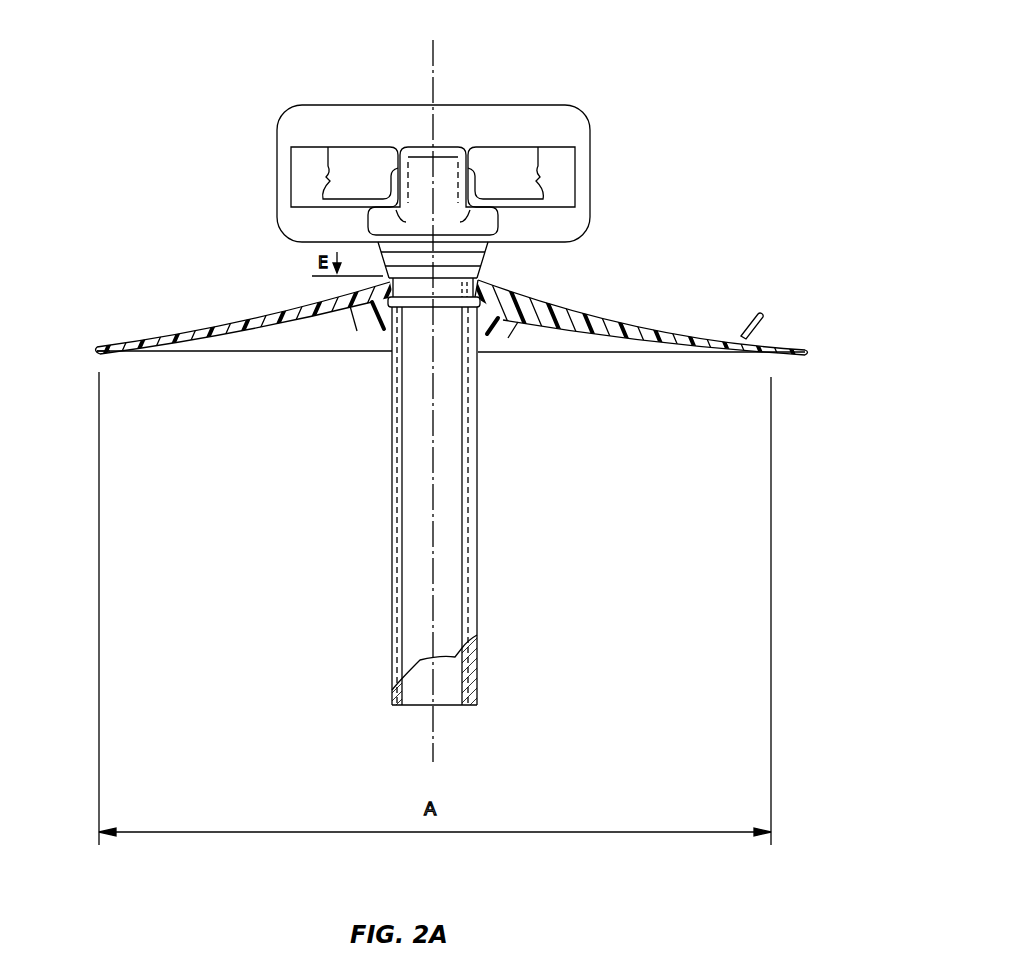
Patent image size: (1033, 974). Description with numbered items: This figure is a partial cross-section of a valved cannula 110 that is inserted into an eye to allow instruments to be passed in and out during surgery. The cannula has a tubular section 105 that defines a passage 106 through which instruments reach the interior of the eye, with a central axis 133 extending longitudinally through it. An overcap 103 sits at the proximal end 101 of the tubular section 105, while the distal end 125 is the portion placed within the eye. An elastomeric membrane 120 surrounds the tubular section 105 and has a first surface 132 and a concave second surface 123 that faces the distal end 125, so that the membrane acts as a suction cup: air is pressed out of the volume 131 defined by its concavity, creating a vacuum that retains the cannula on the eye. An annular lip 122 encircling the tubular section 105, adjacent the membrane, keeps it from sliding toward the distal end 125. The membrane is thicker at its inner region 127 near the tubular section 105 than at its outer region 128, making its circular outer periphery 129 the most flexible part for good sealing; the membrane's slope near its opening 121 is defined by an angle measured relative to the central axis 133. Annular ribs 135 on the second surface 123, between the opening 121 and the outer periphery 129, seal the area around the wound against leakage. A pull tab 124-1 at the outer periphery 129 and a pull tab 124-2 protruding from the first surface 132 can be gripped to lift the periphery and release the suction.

The valved cannula 110 is at (473, 380).
The overcap 103 is at (277, 180).
The proximal end 101 is at (490, 255).
The inner region 127 is at (490, 283).
The first surface 132 is at (683, 343).
The pull tab 124-2 is at (762, 318).
The pull tab 124-1 is at (800, 348).
The outer periphery 129 is at (95, 349).
The elastomeric membrane 120 is at (195, 333).
The outer region 128 is at (155, 352).
The volume 131 is at (295, 346).
The annular rib 135 is at (370, 331).
The opening 121 is at (394, 300).
The annular lip 122 is at (444, 308).
The second surface 123 is at (678, 343).
The tubular section 105 is at (478, 580).
The distal end 125 is at (478, 672).
The passage 106 is at (455, 700).
The central axis 133 is at (440, 740).